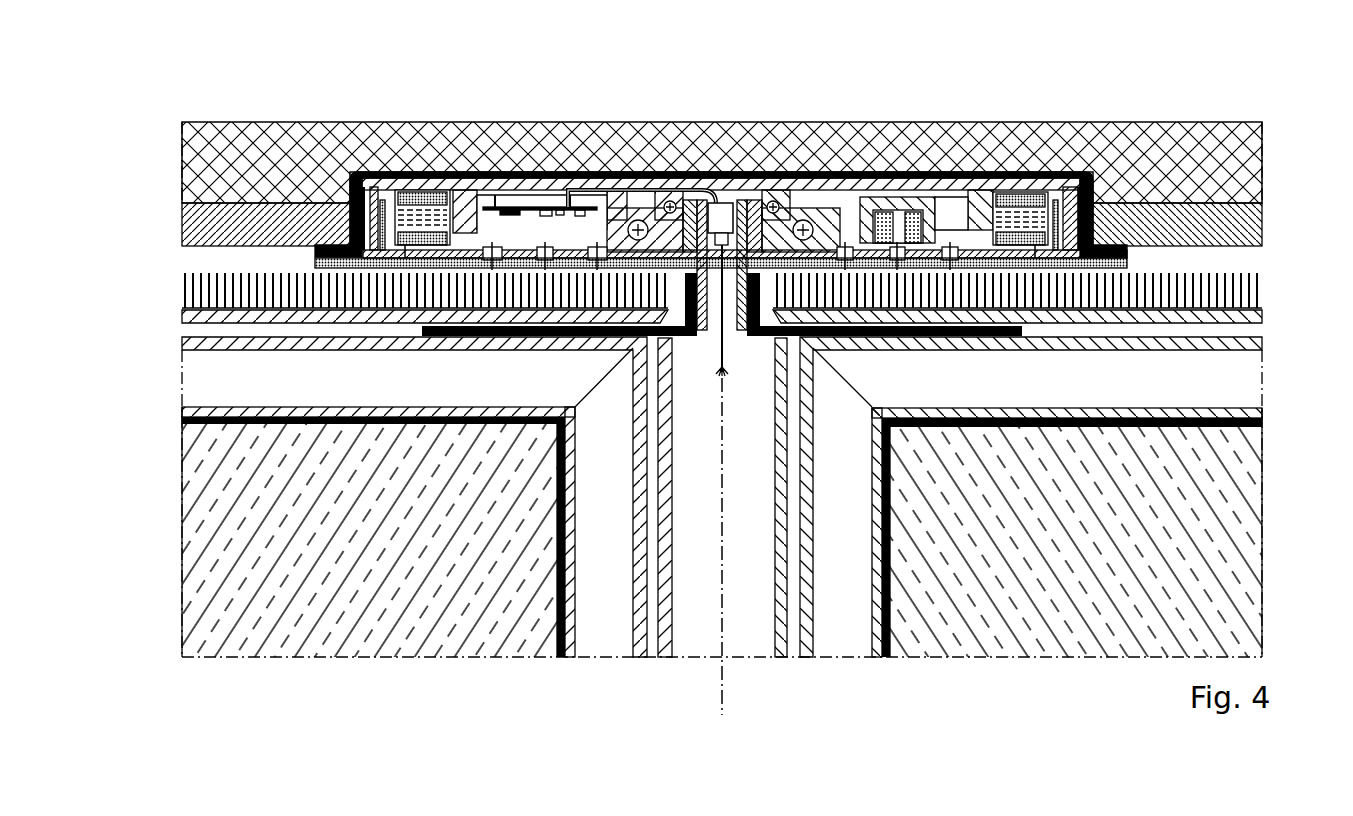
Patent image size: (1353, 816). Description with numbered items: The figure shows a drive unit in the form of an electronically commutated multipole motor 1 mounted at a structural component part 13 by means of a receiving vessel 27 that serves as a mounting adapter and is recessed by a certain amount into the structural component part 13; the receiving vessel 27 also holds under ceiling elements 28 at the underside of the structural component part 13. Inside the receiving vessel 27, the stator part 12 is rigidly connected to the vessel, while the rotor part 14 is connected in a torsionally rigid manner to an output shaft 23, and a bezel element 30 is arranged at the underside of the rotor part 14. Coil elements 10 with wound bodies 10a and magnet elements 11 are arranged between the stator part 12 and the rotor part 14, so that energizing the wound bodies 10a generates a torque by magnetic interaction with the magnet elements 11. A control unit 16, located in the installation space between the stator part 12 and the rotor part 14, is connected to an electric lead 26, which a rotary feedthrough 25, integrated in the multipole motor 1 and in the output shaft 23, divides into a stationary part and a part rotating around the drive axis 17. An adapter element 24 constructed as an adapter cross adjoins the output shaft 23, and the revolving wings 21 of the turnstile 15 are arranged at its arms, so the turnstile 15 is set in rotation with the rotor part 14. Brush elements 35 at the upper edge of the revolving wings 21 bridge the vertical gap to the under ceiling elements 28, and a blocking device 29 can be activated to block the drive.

The multipole motor 1 is at (843, 168).
The coil elements 10 is at (418, 192).
The wound bodies 10a is at (410, 252).
The magnet elements 11 is at (372, 185).
The stator part 12 is at (555, 205).
The structural component part 13 is at (1217, 150).
The rotor part 14 is at (977, 250).
The turnstile 15 is at (182, 541).
The control unit 16 is at (540, 190).
The drive axis 17 is at (723, 708).
The revolving wings 21 is at (400, 630).
The output shaft 23 is at (760, 200).
The adapter element 24 is at (510, 337).
The rotary feedthrough 25 is at (712, 203).
The electric lead 26 is at (632, 190).
The receiving vessel 27 is at (492, 180).
The under ceiling elements 28 is at (265, 215).
The blocking device 29 is at (913, 210).
The bezel element 30 is at (1130, 262).
The brush elements 35 is at (200, 290).